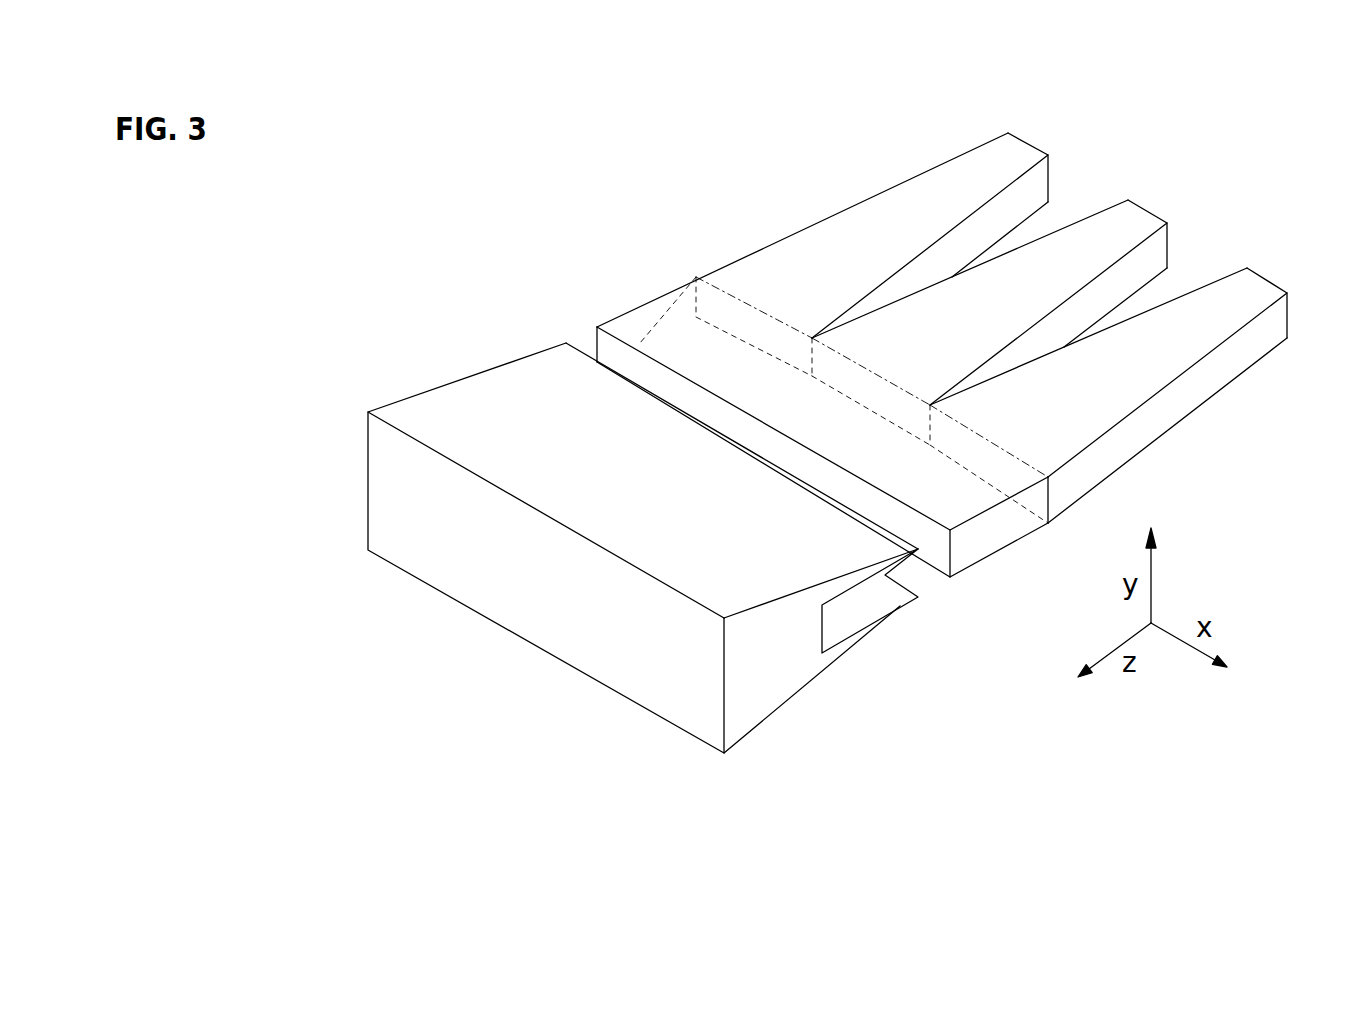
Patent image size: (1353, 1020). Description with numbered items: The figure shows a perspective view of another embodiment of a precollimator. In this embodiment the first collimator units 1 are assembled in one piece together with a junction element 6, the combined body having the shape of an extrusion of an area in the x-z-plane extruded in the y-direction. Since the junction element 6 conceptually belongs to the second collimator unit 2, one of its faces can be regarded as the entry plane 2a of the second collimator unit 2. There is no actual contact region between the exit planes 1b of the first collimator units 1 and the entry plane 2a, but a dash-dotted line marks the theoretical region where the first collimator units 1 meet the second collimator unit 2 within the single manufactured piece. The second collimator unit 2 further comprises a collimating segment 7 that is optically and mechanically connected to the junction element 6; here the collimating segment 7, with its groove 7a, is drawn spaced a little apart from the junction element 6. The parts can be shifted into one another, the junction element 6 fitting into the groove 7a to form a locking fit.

The first collimator unit 1 is at (723, 266).
The exit plane 1b is at (740, 300).
The second collimator unit 2 is at (612, 283).
The entry plane 2a is at (843, 362).
The junction element 6 is at (662, 305).
The collimating segment 7 is at (413, 412).
The groove 7a is at (877, 608).